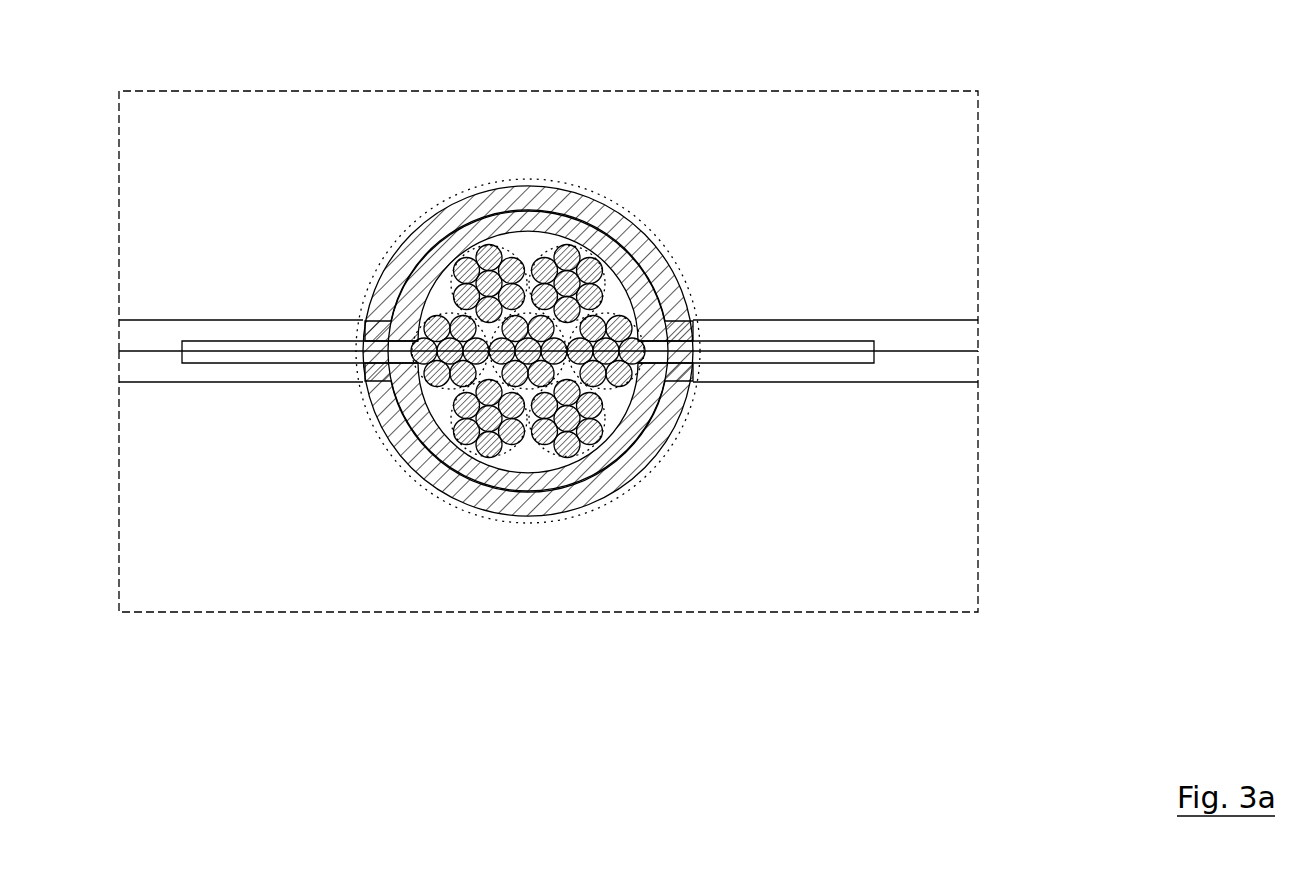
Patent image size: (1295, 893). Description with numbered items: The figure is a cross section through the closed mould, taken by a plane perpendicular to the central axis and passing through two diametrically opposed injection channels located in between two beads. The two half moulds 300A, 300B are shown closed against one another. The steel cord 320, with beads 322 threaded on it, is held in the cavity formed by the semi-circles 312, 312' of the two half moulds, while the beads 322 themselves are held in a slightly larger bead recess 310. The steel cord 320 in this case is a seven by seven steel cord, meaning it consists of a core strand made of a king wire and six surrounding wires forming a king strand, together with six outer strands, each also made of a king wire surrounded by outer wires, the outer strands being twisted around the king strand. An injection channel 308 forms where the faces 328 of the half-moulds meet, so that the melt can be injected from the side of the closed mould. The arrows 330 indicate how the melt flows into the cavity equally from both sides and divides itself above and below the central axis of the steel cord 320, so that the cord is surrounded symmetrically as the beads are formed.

The half mould 300A is at (937, 147).
The half mould 300B is at (955, 593).
The injection channel 308 is at (936, 364).
The bead recess 310 is at (498, 520).
The semi-circle 312 is at (446, 540).
The semi-circle 312' is at (455, 186).
The steel cord 320 is at (541, 240).
The bead 322 is at (597, 212).
The face of the half-mould 328 is at (957, 350).
The arrows indicating melt flow 330 is at (294, 348).